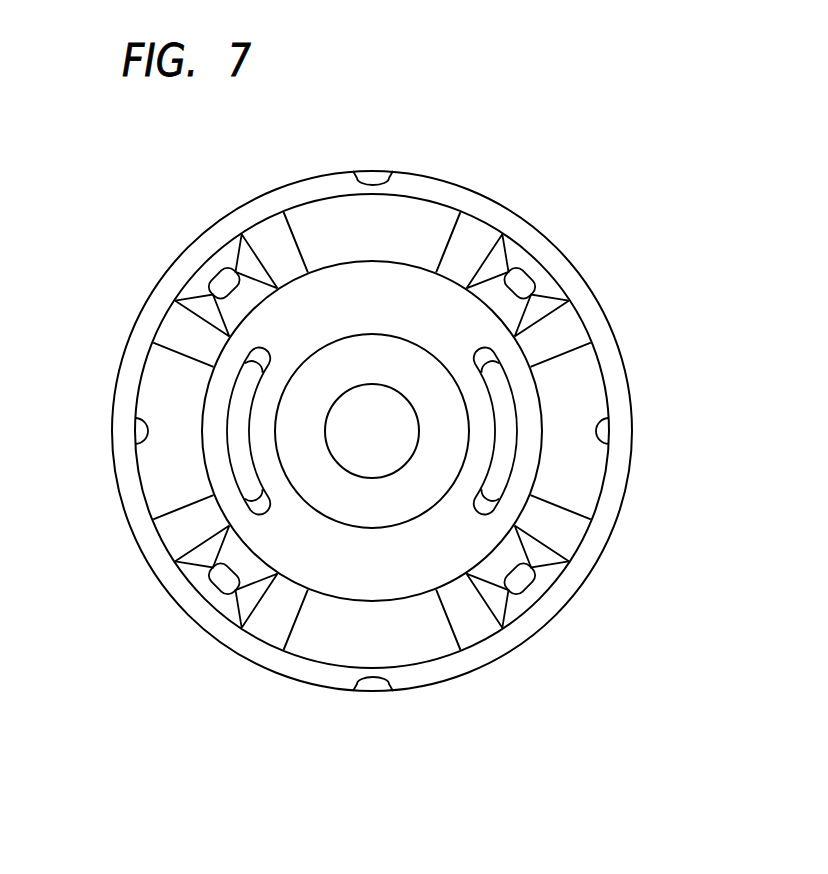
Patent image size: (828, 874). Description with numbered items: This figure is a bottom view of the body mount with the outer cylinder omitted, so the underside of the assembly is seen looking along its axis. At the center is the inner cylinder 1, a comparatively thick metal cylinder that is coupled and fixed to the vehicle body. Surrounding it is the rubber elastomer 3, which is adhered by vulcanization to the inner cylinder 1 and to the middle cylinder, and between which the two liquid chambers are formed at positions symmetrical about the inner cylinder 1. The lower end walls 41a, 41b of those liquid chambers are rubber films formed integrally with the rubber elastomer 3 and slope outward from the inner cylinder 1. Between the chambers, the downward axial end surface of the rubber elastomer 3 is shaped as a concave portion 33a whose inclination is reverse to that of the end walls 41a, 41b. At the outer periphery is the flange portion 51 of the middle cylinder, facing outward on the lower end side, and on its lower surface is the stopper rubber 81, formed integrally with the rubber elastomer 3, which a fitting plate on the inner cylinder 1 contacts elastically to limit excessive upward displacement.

The inner cylinder 1 is at (338, 360).
The rubber elastomer 3 is at (478, 450).
The concave portion 33a is at (505, 398).
The end wall 41a is at (397, 567).
The end wall 41b is at (335, 293).
The flange portion 51 is at (600, 321).
The stopper rubber 81 is at (522, 272).